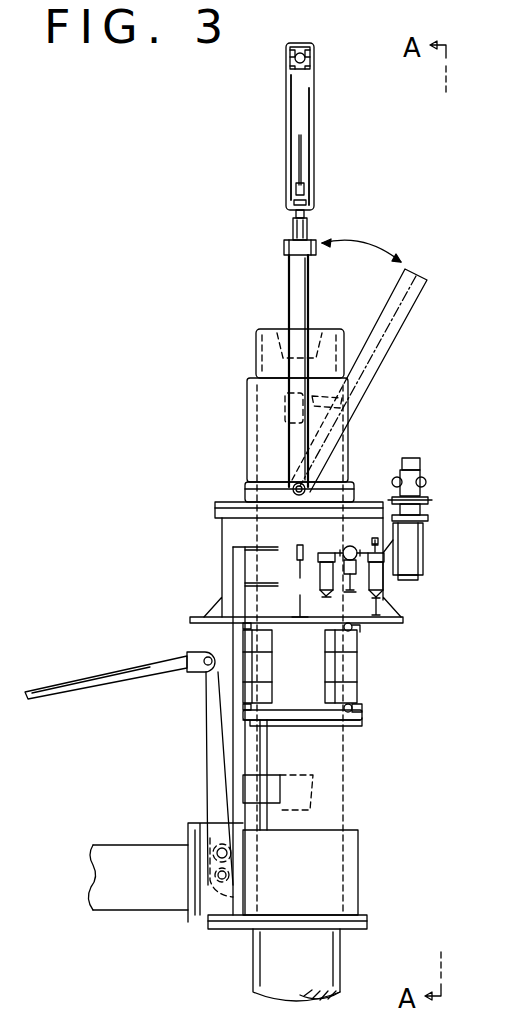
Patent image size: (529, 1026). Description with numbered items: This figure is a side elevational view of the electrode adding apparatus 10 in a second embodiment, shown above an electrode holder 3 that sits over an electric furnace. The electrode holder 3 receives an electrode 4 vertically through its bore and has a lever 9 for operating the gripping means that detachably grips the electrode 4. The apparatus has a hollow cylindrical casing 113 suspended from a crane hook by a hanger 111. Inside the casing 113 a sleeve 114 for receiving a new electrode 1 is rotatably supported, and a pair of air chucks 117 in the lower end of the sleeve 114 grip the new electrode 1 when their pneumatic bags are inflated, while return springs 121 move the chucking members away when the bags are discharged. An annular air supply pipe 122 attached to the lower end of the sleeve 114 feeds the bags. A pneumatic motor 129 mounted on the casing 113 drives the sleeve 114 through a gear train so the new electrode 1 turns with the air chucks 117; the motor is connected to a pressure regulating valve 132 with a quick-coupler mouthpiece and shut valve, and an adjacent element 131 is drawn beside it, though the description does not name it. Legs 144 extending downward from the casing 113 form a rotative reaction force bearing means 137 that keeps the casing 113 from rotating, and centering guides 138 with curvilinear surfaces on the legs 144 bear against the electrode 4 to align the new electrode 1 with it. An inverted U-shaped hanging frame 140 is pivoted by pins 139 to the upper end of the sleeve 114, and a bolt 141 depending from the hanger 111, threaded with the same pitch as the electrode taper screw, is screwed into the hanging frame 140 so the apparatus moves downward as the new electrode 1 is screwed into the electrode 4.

The new electrode 1 is at (256, 351).
The electrode holder 3 is at (357, 462).
The electrode 4 is at (316, 962).
The lever 9 is at (210, 776).
The electrode adding apparatus 10 is at (426, 412).
The hanger 111 is at (316, 172).
The hollow cylindrical casing 113 is at (385, 607).
The sleeve 114 is at (305, 698).
The air chucks 117 is at (246, 651).
The return springs 121 is at (353, 631).
The annular air supply pipe 122 is at (352, 724).
The pneumatic motor 129 is at (425, 482).
The cylinder 131 is at (385, 550).
The pressure regulating valve 132 is at (384, 576).
The rotative reaction force bearing means 137 is at (233, 756).
The centering guides 138 is at (278, 797).
The pins 139 is at (292, 490).
The hanging frame 140 is at (297, 291).
The bolt 141 is at (292, 227).
The legs 144 is at (233, 886).